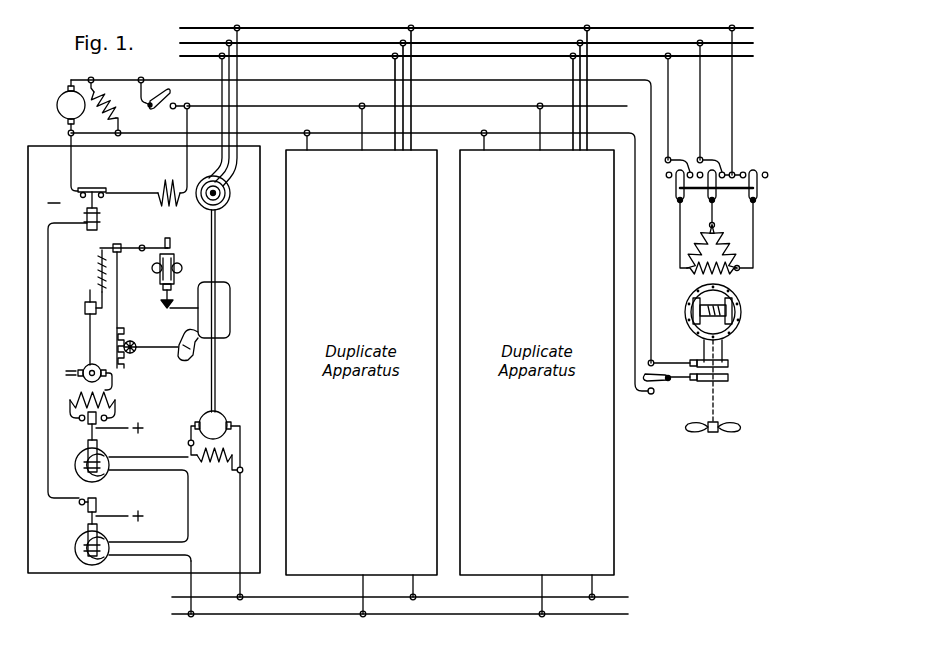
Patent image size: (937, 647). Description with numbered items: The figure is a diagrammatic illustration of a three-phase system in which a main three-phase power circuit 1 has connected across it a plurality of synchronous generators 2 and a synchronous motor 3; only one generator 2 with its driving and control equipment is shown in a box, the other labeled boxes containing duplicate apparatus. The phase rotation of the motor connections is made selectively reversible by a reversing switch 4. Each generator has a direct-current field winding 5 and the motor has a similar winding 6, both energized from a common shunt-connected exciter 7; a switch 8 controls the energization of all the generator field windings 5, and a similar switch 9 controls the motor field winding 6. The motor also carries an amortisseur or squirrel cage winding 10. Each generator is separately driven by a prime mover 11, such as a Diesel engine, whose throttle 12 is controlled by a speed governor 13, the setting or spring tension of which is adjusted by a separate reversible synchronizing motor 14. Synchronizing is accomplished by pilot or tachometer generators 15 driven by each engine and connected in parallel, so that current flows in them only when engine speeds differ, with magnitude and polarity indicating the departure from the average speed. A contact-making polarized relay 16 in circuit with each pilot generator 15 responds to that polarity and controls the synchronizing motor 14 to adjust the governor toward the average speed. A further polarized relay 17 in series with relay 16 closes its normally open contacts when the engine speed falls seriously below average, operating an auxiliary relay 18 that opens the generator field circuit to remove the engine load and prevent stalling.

The main three-phase power circuit 1 is at (306, 52).
The synchronous generator 2 is at (228, 205).
The synchronous motor 3 is at (758, 293).
The reversing switch 4 is at (758, 188).
The direct-current field winding 5 is at (168, 180).
The motor field winding 6 is at (697, 300).
The shunt-connected exciter 7 is at (89, 106).
The switch 8 is at (170, 108).
The switch 9 is at (668, 382).
The amortisseur winding 10 is at (737, 325).
The prime mover 11 is at (230, 282).
The throttle 12 is at (185, 345).
The speed governor 13 is at (178, 276).
The reversible synchronizing motor 14 is at (85, 368).
The pilot generator 15 is at (248, 418).
The polarized relay 16 is at (80, 457).
The polarized relay 17 is at (78, 549).
The auxiliary relay 18 is at (97, 215).